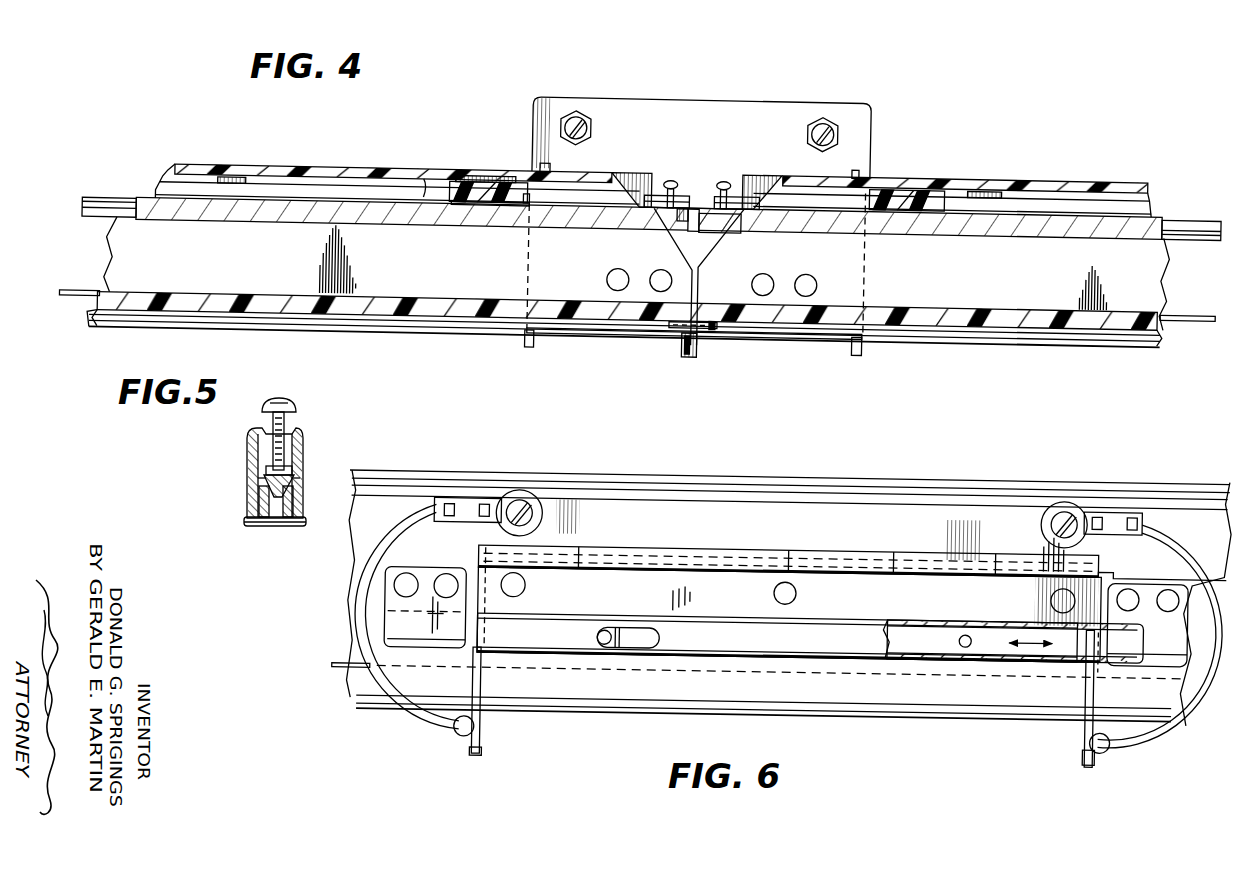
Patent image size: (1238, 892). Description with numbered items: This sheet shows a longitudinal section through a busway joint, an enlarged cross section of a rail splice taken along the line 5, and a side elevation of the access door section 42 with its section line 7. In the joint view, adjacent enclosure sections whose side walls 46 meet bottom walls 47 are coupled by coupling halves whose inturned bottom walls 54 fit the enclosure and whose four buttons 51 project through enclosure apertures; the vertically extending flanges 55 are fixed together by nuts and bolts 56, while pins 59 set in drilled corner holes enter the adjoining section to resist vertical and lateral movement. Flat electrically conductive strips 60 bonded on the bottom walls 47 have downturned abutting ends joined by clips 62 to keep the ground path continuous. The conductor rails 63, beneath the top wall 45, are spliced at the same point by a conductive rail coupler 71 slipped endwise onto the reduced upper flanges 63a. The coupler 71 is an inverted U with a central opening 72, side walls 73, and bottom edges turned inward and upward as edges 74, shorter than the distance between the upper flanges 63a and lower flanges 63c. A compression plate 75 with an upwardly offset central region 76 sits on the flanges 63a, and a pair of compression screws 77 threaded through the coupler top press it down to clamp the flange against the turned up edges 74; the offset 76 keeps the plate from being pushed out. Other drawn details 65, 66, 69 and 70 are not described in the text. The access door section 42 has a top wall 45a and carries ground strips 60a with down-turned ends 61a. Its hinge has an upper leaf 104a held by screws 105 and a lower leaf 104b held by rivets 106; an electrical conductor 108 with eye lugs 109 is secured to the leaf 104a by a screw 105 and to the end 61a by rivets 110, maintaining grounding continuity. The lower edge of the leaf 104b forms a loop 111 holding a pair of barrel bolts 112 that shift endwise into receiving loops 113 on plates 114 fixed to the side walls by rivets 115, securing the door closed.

In FIG. 4, the section line 5— 5 is at (722, 179).
In FIG. 6, the section line 7— 7 is at (1088, 620).
In FIG. 6, the side access door enclosure section 42 is at (470, 466).
In FIG. 4, the top wall 45 is at (356, 176).
In FIG. 6, the top wall 45a is at (893, 488).
In FIG. 4, the side walls 46 is at (142, 240).
In FIG. 4, the bottom walls 47 is at (544, 306).
In FIG. 4, the buttons 51 is at (624, 282).
In FIG. 4, the inturned bottom walls 54 is at (591, 334).
In FIG. 4, the vertically extending flanges 55 is at (704, 112).
In FIG. 4, the nuts and bolts 56 is at (592, 128).
In FIG. 4, the pins 59 is at (720, 332).
In FIG. 4, the electrically conductive strips 60 is at (84, 292).
In FIG. 6, the electrically conductive flat strips 60a is at (341, 669).
In FIG. 6, the down-turned ends 61a is at (490, 749).
In FIG. 4, the clips 62 is at (686, 350).
In FIG. 4, the conductor rails 63 is at (297, 222).
In FIG. 5, the upper flanges 63a is at (295, 480).
In FIG. 5, the lower flanges 63c is at (283, 527).
In FIG. 4, the stop 65 is at (520, 205).
In FIG. 4, the plate 66 is at (480, 212).
In FIG. 4, the lip 69 is at (428, 178).
In FIG. 4, the strip 70 is at (480, 180).
In FIG. 5, the conductive rail coupler 71 is at (247, 457).
In FIG. 4, the opening 72 is at (686, 207).
In FIG. 5, the side walls 73 is at (256, 479).
In FIG. 5, the turned up edges 74 is at (263, 500).
In FIG. 4, the compression plate 75 is at (738, 214).
In FIG. 5, the compression plate 75 is at (294, 468).
In FIG. 4, the upwardly offset central region 76 is at (688, 226).
In FIG. 4, the compression screws 77 is at (670, 181).
In FIG. 5, the compression screws 77 is at (290, 406).
In FIG. 6, the upper hinge leaf 104a is at (699, 494).
In FIG. 6, the lower hinge leaf 104b is at (727, 598).
In FIG. 6, the screws 105 is at (1046, 526).
In FIG. 6, the rivets 106 is at (799, 593).
In FIG. 6, the electrical conductor 108 is at (1185, 540).
In FIG. 6, the eye lugs 109 is at (1122, 532).
In FIG. 6, the rivets 110 is at (1086, 741).
In FIG. 6, the loop 111 is at (556, 624).
In FIG. 6, the barrel bolts 112 is at (993, 636).
In FIG. 6, the receiving loops 113 is at (414, 638).
In FIG. 6, the plates 114 is at (424, 574).
In FIG. 6, the rivets 115 is at (453, 574).